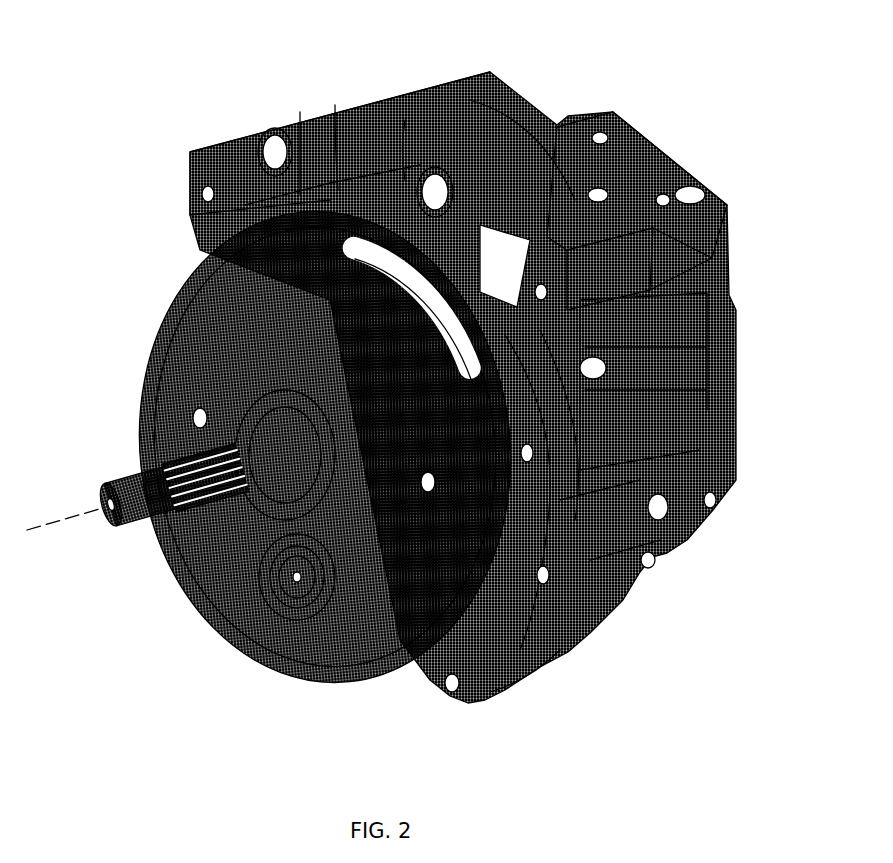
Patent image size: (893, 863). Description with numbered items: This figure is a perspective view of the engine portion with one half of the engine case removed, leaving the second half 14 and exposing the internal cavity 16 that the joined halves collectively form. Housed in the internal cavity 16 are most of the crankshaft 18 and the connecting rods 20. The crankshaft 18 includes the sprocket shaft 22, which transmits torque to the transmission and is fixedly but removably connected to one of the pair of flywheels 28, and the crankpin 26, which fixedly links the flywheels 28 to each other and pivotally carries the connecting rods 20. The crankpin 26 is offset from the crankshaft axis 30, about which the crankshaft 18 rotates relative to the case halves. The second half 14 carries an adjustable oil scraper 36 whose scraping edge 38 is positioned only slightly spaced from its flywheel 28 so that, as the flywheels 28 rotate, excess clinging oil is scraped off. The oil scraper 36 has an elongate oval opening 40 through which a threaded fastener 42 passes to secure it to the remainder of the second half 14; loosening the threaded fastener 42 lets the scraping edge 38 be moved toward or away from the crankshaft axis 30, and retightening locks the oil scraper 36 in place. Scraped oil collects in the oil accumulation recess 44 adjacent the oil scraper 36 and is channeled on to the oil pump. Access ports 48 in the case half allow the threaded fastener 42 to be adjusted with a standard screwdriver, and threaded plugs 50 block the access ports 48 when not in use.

The second half 14 is at (457, 78).
The internal cavity 16 is at (360, 163).
The crankshaft 18 is at (197, 560).
The connecting rods 20 is at (410, 90).
The sprocket shaft 22 is at (215, 500).
The crankpin 26 is at (297, 607).
The flywheels 28 is at (558, 135).
The crankshaft axis 30 is at (63, 518).
The oil scraper 36 is at (583, 643).
The scraping edge 38 is at (620, 600).
The oval opening 40 is at (505, 260).
The threaded fastener 42 is at (730, 230).
The oil accumulation recess 44 is at (727, 375).
The access ports 48 is at (670, 457).
The threaded plugs 50 is at (686, 505).